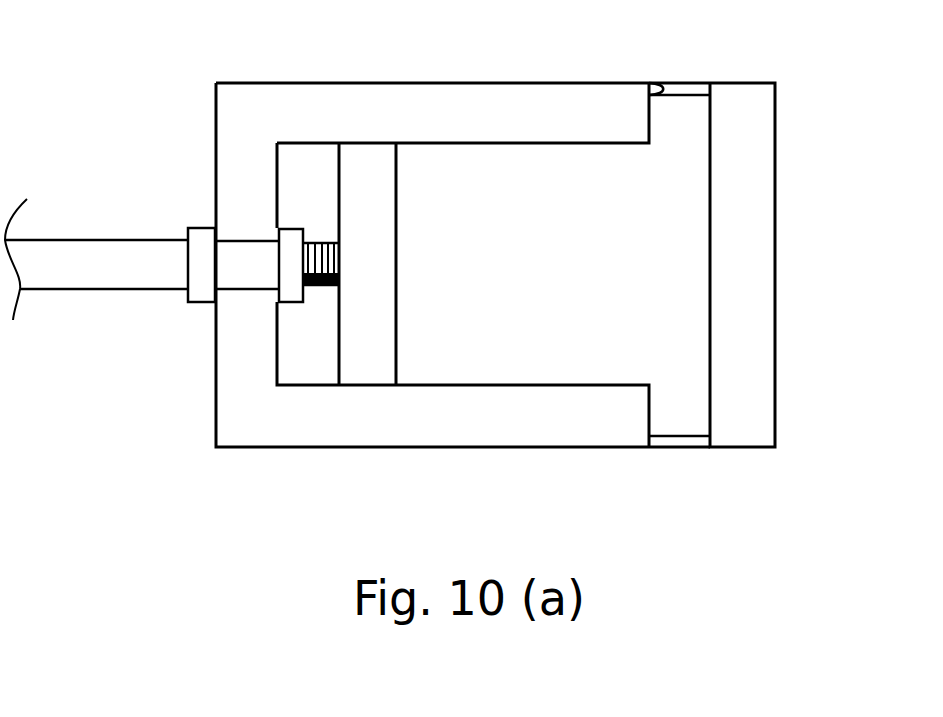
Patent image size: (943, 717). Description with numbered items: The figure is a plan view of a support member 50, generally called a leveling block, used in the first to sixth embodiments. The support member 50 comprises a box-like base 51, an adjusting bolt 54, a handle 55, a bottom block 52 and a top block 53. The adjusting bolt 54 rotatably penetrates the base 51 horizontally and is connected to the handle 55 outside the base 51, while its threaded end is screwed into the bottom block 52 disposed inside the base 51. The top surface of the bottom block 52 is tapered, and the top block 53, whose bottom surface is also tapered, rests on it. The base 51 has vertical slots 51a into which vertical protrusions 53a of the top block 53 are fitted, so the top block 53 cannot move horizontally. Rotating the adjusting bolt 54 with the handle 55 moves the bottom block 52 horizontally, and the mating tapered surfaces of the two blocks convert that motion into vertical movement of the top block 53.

The support member 50 is at (186, 134).
The base 51 is at (480, 112).
The vertical slots 51a is at (672, 82).
The bottom block 52 is at (371, 355).
The top block 53 is at (512, 355).
The vertical protrusions of the top block 53a is at (688, 117).
The adjusting bolt 54 is at (324, 243).
The handle 55 is at (95, 262).